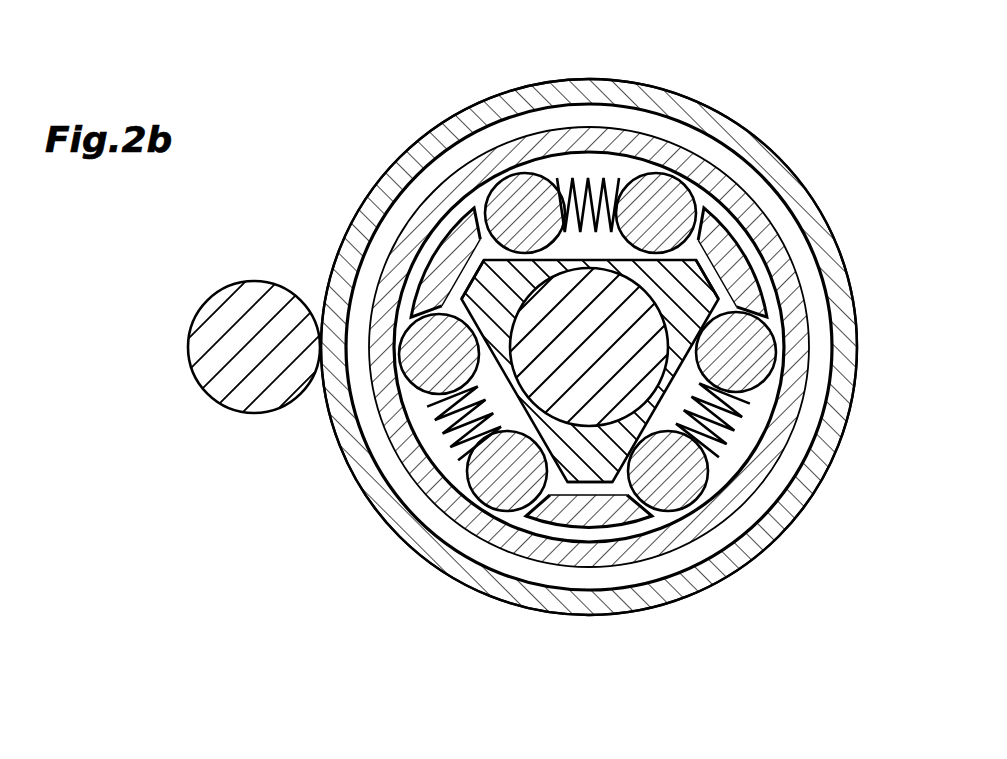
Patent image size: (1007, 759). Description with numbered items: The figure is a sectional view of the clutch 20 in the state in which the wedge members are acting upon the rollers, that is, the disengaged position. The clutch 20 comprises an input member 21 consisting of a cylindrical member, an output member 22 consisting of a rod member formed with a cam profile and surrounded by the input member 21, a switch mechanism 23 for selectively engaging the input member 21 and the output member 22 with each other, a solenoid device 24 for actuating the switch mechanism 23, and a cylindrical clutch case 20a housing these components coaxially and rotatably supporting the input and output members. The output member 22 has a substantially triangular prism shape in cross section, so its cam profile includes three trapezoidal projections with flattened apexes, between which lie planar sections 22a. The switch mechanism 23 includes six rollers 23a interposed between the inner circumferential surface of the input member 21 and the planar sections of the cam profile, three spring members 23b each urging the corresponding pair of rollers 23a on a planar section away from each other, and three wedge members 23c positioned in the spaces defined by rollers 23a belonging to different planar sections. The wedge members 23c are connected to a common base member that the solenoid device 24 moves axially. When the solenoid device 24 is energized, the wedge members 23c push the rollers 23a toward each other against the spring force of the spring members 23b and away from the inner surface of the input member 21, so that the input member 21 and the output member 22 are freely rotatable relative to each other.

The clutch 20 is at (368, 90).
The clutch case 20a is at (362, 236).
The input member 21 is at (504, 152).
The output member 22 is at (707, 293).
The cam flat face 22a is at (722, 229).
The switch mechanism 23 is at (431, 225).
The rollers 23a is at (527, 195).
The spring members 23b is at (597, 178).
The wedge members 23c is at (456, 224).
The solenoid device 24 is at (260, 295).